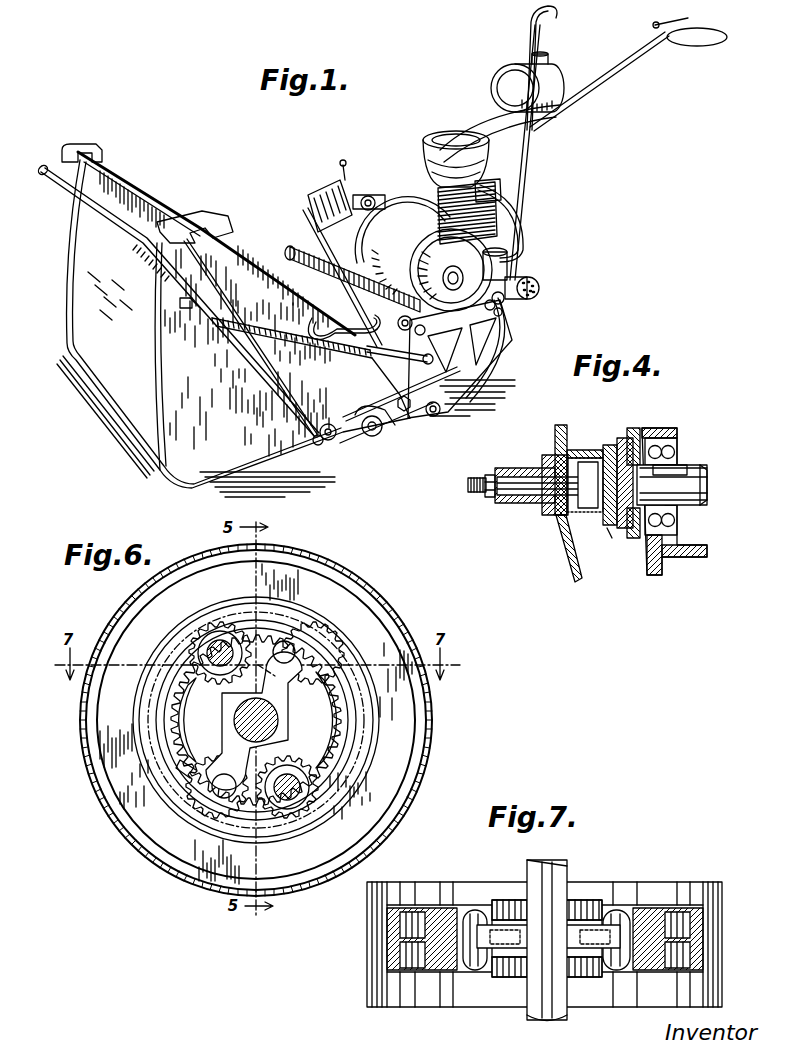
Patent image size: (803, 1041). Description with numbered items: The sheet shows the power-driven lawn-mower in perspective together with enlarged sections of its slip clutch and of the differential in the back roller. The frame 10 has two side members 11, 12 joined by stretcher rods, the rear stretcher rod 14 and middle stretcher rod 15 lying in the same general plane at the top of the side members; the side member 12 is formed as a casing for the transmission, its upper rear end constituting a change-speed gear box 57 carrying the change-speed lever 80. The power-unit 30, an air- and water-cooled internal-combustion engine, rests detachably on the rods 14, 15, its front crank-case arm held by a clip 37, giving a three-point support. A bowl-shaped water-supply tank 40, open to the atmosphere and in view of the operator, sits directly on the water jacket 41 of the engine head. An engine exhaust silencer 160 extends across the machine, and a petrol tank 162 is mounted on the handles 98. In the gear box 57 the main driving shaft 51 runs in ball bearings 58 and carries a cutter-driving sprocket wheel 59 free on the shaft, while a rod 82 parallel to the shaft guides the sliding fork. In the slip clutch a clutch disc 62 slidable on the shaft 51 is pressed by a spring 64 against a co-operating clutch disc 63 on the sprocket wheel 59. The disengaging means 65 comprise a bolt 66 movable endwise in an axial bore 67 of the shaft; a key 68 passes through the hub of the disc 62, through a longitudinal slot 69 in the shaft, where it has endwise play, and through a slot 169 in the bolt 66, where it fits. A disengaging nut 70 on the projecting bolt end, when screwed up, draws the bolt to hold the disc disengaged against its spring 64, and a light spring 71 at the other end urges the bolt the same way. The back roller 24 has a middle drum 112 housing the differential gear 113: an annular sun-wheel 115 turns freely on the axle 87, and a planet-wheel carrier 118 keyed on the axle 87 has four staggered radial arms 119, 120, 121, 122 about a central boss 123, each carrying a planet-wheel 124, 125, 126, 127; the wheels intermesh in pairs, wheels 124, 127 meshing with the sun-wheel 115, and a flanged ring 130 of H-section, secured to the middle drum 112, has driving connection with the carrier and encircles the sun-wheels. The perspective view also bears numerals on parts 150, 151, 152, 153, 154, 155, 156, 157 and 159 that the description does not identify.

In FIG. 1, the frame 10 is at (434, 416).
In FIG. 1, the side member 11 is at (382, 422).
In FIG. 4, the side member 11 is at (560, 426).
In FIG. 1, the side member 12 is at (312, 232).
In FIG. 1, the rear stretcher rod 14 is at (507, 266).
In FIG. 1, the middle stretcher rod 15 is at (312, 258).
In FIG. 1, the back roller 24 is at (505, 355).
In FIG. 6, the back roller 24 is at (400, 624).
In FIG. 1, the power-unit 30 is at (480, 238).
In FIG. 1, the clip 37 is at (395, 322).
In FIG. 1, the water-supply tank 40 is at (447, 133).
In FIG. 1, the water jacket 41 is at (490, 208).
In FIG. 1, the main driving shaft 51 is at (368, 195).
In FIG. 4, the main driving shaft 51 is at (683, 468).
In FIG. 1, the change-speed gear box 57 is at (330, 185).
In FIG. 4, the ball bearings 58 is at (688, 522).
In FIG. 4, the cutter-driving sprocket wheel 59 is at (636, 428).
In FIG. 4, the clutch disc 62 is at (608, 445).
In FIG. 4, the co-operating clutch disc 63 is at (624, 438).
In FIG. 4, the spring 64 is at (572, 448).
In FIG. 4, the disengaging means 65 is at (493, 474).
In FIG. 4, the bolt 66 is at (510, 500).
In FIG. 4, the axial bore 67 is at (531, 495).
In FIG. 4, the key 68 is at (588, 458).
In FIG. 4, the longitudinal slot 69 is at (589, 509).
In FIG. 4, the disengaging nut 70 is at (486, 492).
In FIG. 4, the light spring 71 is at (609, 532).
In FIG. 1, the change-speed lever 80 is at (344, 162).
In FIG. 4, the rod 82 is at (705, 492).
In FIG. 6, the axle 87 is at (234, 718).
In FIG. 7, the axle 87 is at (543, 1000).
In FIG. 1, the handles 98 is at (516, 162).
In FIG. 7, the middle drum 112 is at (658, 887).
In FIG. 6, the differential gear 113 is at (80, 694).
In FIG. 6, the annular sun-wheel 115 is at (185, 630).
In FIG. 7, the planet-wheel carrier 118 is at (494, 903).
In FIG. 6, the radial arm 119 is at (333, 627).
In FIG. 7, the radial arm 119 is at (590, 968).
In FIG. 6, the radial arm 120 is at (245, 712).
In FIG. 7, the radial arm 120 is at (512, 905).
In FIG. 6, the radial arm 121 is at (330, 770).
In FIG. 7, the radial arm 121 is at (585, 900).
In FIG. 6, the radial arm 122 is at (215, 800).
In FIG. 7, the radial arm 122 is at (505, 972).
In FIG. 6, the central boss 123 is at (282, 718).
In FIG. 7, the central boss 123 is at (540, 895).
In FIG. 6, the planet-wheel 124 is at (295, 630).
In FIG. 6, the planet-wheel 125 is at (203, 630).
In FIG. 6, the planet-wheel 126 is at (290, 822).
In FIG. 6, the planet-wheel 127 is at (190, 790).
In FIG. 6, the flanged ring 130 is at (130, 745).
In FIG. 7, the flanged ring 130 is at (688, 935).
In FIG. 1, the grass bag 150 is at (118, 396).
In FIG. 1, the support rod 151 is at (90, 220).
In FIG. 1, the pivot 152 is at (298, 446).
In FIG. 1, the pivot 153 is at (331, 441).
In FIG. 1, the tension rod 154 is at (248, 330).
In FIG. 1, the rod section 155 is at (194, 306).
In FIG. 1, the clamp 156 is at (180, 303).
In FIG. 1, the hook 157 is at (78, 148).
In FIG. 1, the bracket 159 is at (328, 288).
In FIG. 1, the engine exhaust silencer 160 is at (540, 288).
In FIG. 1, the petrol tank 162 is at (510, 88).
In FIG. 4, the slot 169 is at (548, 460).